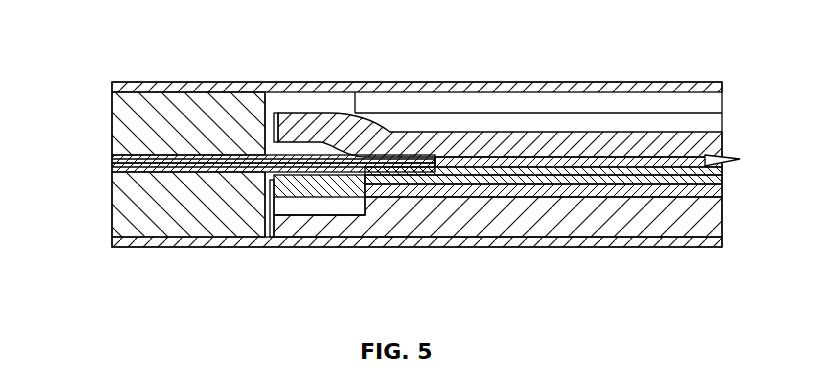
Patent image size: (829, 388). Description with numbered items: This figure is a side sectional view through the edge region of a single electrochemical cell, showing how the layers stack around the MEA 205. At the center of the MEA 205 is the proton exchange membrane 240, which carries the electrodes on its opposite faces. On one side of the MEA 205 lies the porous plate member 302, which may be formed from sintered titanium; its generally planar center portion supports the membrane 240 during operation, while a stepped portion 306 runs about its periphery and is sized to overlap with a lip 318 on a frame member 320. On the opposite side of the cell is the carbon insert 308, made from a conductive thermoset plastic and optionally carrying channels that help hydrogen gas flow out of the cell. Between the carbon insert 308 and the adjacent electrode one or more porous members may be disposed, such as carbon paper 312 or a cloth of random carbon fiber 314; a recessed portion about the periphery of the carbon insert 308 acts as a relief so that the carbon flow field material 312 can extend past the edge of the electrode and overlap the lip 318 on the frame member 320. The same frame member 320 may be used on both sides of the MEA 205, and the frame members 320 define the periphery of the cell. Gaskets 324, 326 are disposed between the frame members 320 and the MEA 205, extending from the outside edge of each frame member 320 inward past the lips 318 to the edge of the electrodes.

The MEA 205 is at (190, 52).
The proton exchange membrane 240 is at (723, 150).
The porous plate member 302 is at (462, 112).
The stepped portion 306 is at (290, 113).
The carbon insert 308 is at (507, 247).
The carbon paper 312 is at (724, 178).
The cloth of random carbon fiber 314 is at (724, 191).
The lip 318 is at (276, 116).
The frame member 320 is at (112, 117).
The gasket 324 is at (112, 170).
The gasket 326 is at (112, 157).